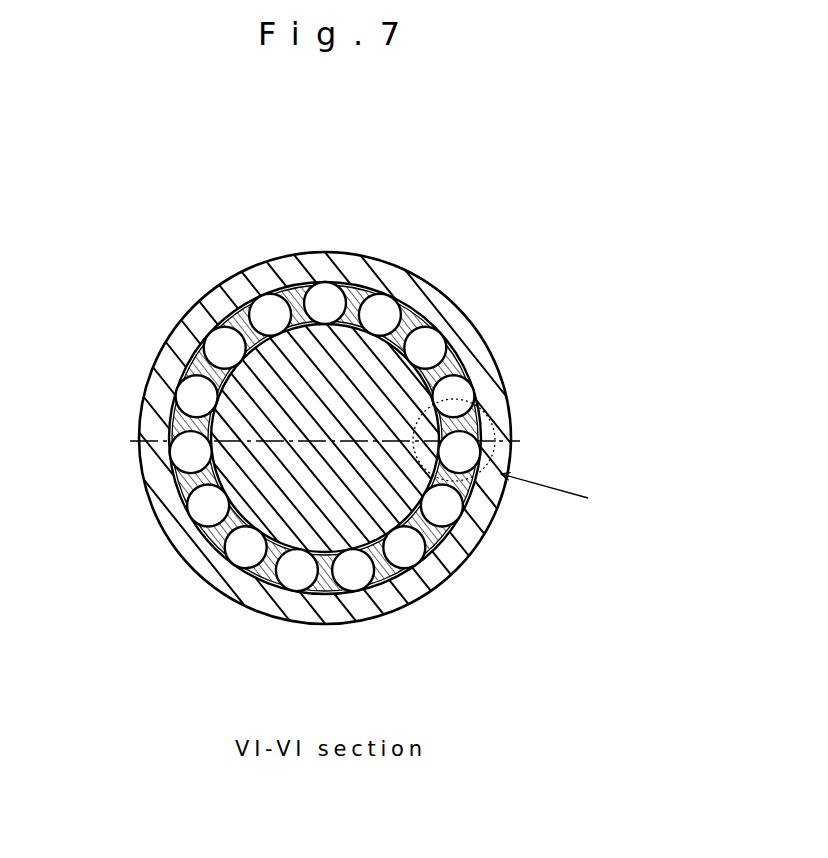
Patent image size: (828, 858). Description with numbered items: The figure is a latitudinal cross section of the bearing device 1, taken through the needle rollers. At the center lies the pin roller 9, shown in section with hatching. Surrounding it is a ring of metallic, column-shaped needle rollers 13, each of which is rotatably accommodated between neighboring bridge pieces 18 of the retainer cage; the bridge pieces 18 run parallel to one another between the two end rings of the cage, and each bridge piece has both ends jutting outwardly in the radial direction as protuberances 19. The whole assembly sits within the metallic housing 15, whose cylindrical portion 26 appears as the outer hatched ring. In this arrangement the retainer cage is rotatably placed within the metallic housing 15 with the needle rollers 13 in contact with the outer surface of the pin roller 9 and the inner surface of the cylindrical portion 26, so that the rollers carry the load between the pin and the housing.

The bearing device 1 is at (433, 212).
The pin roller 9 is at (376, 365).
The needle rollers 13 is at (321, 300).
The metallic housing 15 is at (194, 299).
The cylindrical portion 26 is at (258, 272).
The bridge pieces 18 is at (426, 364).
The protuberances 19 is at (443, 363).